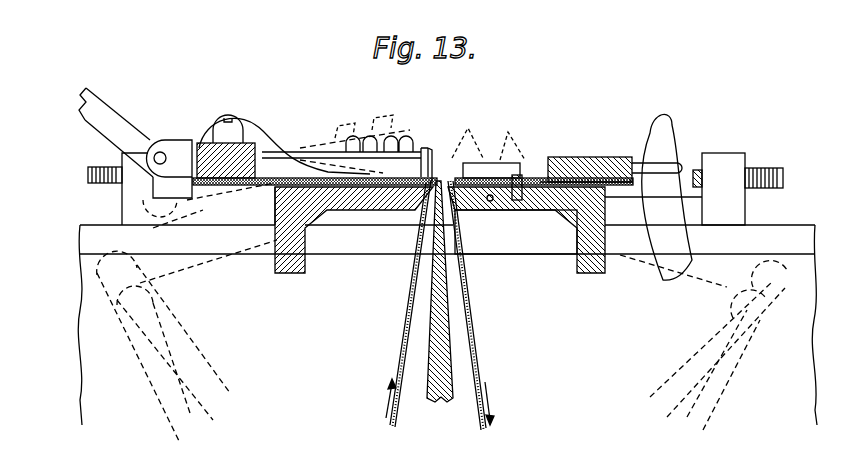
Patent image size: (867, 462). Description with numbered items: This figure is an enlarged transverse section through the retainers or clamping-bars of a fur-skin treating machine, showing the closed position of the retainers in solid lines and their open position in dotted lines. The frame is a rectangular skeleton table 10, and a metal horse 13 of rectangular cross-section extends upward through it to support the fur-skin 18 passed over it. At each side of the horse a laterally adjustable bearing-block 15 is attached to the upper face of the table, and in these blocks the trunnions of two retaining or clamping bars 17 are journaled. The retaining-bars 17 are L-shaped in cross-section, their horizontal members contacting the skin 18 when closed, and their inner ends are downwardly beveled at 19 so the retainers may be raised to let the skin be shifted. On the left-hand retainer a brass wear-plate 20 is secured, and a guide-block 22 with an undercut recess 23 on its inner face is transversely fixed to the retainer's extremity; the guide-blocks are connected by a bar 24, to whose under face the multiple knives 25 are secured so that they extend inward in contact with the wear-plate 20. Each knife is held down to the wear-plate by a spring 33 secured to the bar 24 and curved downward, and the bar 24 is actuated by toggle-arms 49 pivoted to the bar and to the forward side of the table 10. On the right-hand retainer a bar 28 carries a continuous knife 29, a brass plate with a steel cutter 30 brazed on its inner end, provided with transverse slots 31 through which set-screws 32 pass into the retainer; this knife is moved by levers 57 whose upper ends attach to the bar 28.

The table 10 is at (447, 325).
The horse 13 is at (444, 292).
The bearing-block 15 is at (435, 189).
The retaining or clamping bar 17 is at (362, 210).
The fur-skin 18 is at (407, 326).
The downwardly beveled inner end 19 is at (465, 215).
The wear-plate 20 is at (246, 188).
The guide-block 22 is at (325, 152).
The undercut recess 23 is at (413, 170).
The bar 24 is at (207, 143).
The multiple knives 25 is at (413, 174).
The bar 28 is at (600, 160).
The continuous knife 29 is at (568, 182).
The steel cutter 30 is at (466, 176).
The transverse slot 31 is at (530, 177).
The set-screw 32 is at (482, 202).
The spring 33 is at (263, 130).
The toggle-arm 49 is at (135, 132).
The lever 57 is at (673, 200).